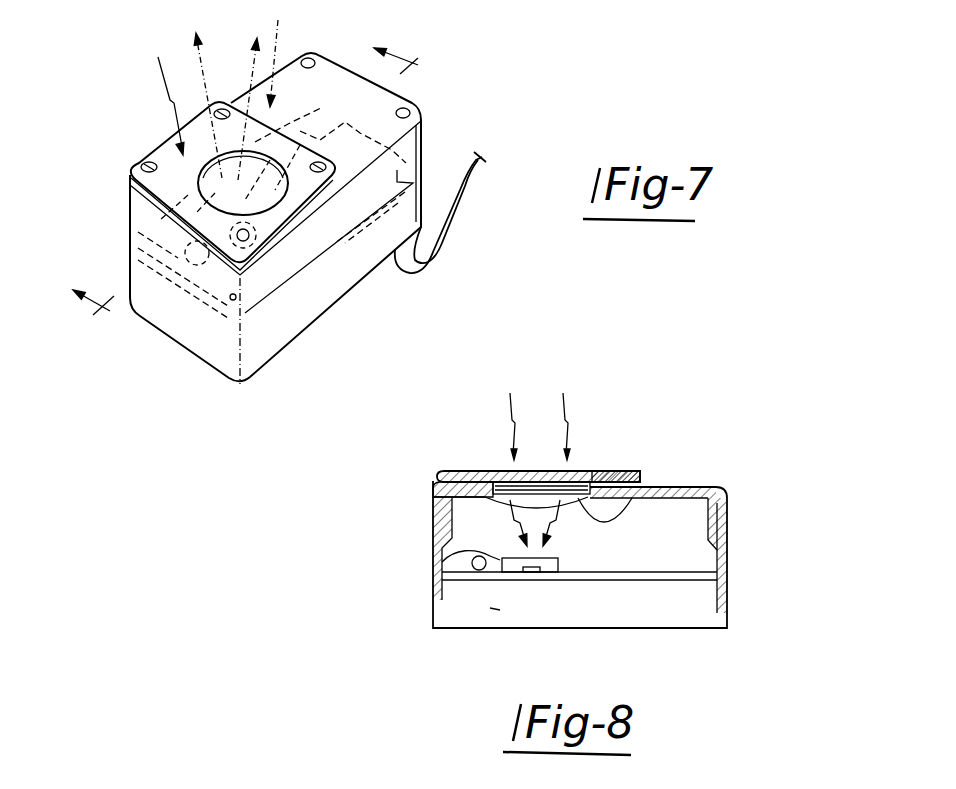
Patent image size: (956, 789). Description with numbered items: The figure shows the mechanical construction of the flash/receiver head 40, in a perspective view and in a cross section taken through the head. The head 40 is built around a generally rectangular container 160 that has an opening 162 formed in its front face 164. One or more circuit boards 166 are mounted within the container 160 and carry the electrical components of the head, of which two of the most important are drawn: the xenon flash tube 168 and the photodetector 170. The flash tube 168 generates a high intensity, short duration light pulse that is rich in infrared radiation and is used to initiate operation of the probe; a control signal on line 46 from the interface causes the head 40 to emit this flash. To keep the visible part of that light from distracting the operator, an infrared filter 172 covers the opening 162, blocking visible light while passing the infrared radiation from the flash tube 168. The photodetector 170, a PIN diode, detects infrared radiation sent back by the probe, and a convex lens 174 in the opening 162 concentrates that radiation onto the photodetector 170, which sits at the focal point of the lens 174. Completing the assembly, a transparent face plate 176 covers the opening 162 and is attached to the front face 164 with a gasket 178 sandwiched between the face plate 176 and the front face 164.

In FIG. 7, the flash/receiver head 40 is at (240, 398).
In FIG. 8, the flash/receiver head 40 is at (755, 481).
In FIG. 7, the line 46 is at (457, 217).
In FIG. 8, the container 160 is at (723, 600).
In FIG. 7, the opening 162 is at (207, 180).
In FIG. 8, the opening 162 is at (596, 497).
In FIG. 8, the front face 164 is at (688, 487).
In FIG. 7, the circuit board 166 is at (428, 132).
In FIG. 8, the circuit board 166 is at (683, 572).
In FIG. 7, the xenon flash tube 168 is at (196, 247).
In FIG. 8, the xenon flash tube 168 is at (442, 562).
In FIG. 7, the photodetector 170 is at (323, 107).
In FIG. 8, the photodetector 170 is at (547, 560).
In FIG. 8, the infrared filter 172 is at (508, 472).
In FIG. 8, the convex lens 174 is at (640, 490).
In FIG. 7, the transparent face plate 176 is at (160, 148).
In FIG. 8, the transparent face plate 176 is at (450, 470).
In FIG. 8, the gasket 178 is at (435, 483).